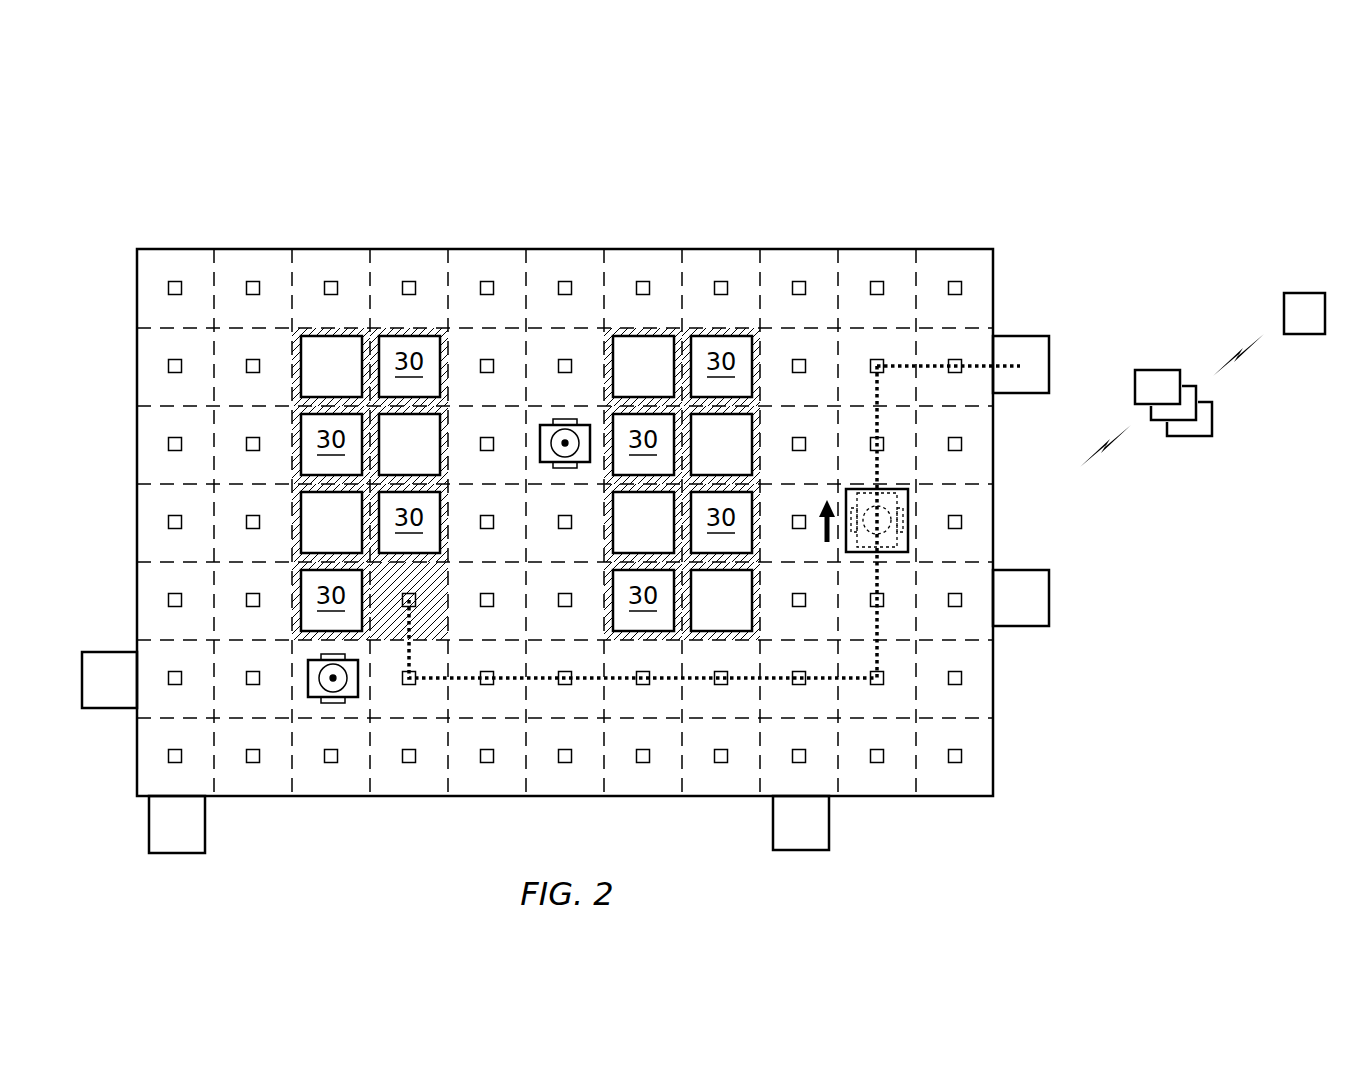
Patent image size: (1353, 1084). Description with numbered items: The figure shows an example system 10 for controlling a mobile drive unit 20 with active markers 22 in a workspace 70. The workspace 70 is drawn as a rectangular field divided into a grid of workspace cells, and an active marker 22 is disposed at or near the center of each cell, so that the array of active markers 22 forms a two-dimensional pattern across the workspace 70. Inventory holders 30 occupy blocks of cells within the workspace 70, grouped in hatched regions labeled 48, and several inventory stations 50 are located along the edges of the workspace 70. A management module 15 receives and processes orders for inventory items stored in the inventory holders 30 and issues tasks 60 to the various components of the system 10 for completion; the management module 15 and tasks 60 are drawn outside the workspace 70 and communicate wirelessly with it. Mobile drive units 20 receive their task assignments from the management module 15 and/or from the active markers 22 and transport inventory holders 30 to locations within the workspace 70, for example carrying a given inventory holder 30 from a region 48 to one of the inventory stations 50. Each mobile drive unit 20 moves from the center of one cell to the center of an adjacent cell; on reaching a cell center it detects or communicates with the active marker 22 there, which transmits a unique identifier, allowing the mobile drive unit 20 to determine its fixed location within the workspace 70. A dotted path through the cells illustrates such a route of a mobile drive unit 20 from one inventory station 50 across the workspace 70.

The system 10 is at (222, 157).
The management module 15 is at (1308, 293).
The mobile drive unit 20 is at (540, 440).
The active marker 22 is at (175, 281).
The inventory holder 30 is at (908, 500).
The storage rack region 48 is at (313, 300).
The inventory station 50 is at (1021, 336).
The task 60 is at (1195, 437).
The workspace 70 is at (625, 272).